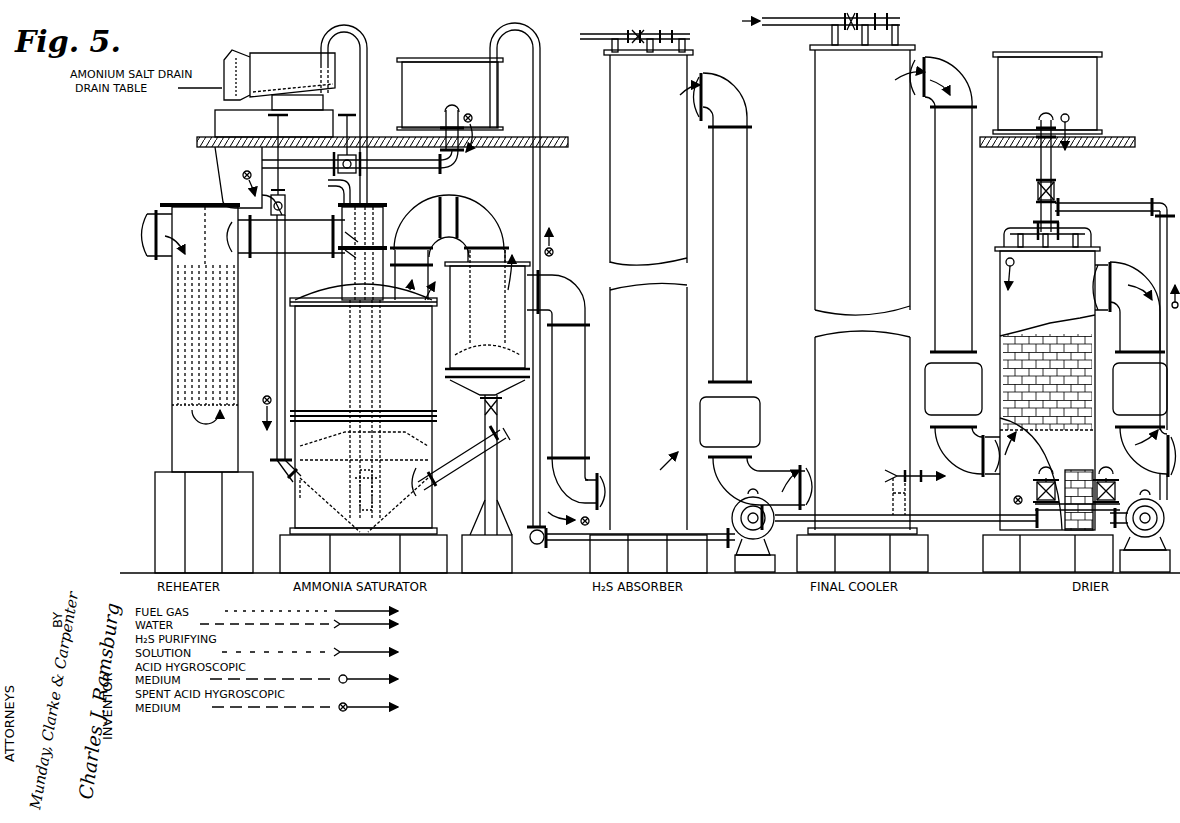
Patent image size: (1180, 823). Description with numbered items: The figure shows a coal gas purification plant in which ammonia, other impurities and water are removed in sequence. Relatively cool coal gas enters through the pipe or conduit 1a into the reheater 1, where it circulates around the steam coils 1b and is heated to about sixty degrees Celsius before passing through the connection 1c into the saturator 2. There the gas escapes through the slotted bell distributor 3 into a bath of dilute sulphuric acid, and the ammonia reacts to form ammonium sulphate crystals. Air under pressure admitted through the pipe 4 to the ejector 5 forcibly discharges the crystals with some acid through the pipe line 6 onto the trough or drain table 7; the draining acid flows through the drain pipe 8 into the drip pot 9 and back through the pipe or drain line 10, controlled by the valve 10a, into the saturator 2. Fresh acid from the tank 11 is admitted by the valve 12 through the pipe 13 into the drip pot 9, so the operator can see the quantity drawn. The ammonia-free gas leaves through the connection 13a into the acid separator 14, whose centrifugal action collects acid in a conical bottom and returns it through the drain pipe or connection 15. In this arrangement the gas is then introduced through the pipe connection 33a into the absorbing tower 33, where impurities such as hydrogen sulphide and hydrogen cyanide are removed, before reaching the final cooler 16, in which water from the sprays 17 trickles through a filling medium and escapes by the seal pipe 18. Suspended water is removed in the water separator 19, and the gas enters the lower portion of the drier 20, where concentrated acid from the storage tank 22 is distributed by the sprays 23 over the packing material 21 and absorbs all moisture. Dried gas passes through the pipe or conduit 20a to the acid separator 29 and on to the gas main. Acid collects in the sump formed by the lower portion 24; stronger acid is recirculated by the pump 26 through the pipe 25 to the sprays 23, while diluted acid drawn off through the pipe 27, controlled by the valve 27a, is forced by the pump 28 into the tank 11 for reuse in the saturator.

The reheater 1 is at (170, 342).
The pipe or conduit 1a is at (150, 232).
The steam coils 1b is at (180, 370).
The connection 1c is at (270, 258).
The saturator 2 is at (363, 428).
The bell distributor 3 is at (398, 448).
The pipe 4 is at (334, 184).
The ejector 5 is at (372, 510).
The pipe line 6 is at (367, 56).
The trough or drain table 7 is at (281, 58).
The drain pipe 8 is at (228, 97).
The drip pot 9 is at (230, 170).
The pipe or drain line 10 is at (277, 354).
The valve 10a is at (286, 120).
The tank 11 is at (431, 66).
The valve 12 is at (338, 160).
The pipe 13 is at (419, 170).
The connection 13a is at (482, 208).
The acid separator 14 is at (452, 346).
The drain pipe or connection 15 is at (460, 458).
The final cooler 16 is at (813, 382).
The sprays 17 is at (898, 25).
The seal pipe 18 is at (924, 479).
The water separator 19 is at (970, 420).
The drier 20 is at (1048, 409).
The pipe or conduit 20a is at (1132, 280).
The packing material 21 is at (1004, 334).
The storage tank 22 is at (1031, 57).
The sprays 23 is at (1082, 237).
The lower portion 24 is at (1070, 525).
The pipe 25 is at (1125, 206).
The pump 26 is at (1140, 532).
The pipe 27 is at (560, 47).
The valve 27a is at (1040, 490).
The pump 28 is at (735, 505).
The acid separator 29 is at (1144, 431).
The absorbing tower 33 is at (608, 234).
The pipe connection 33a is at (582, 368).